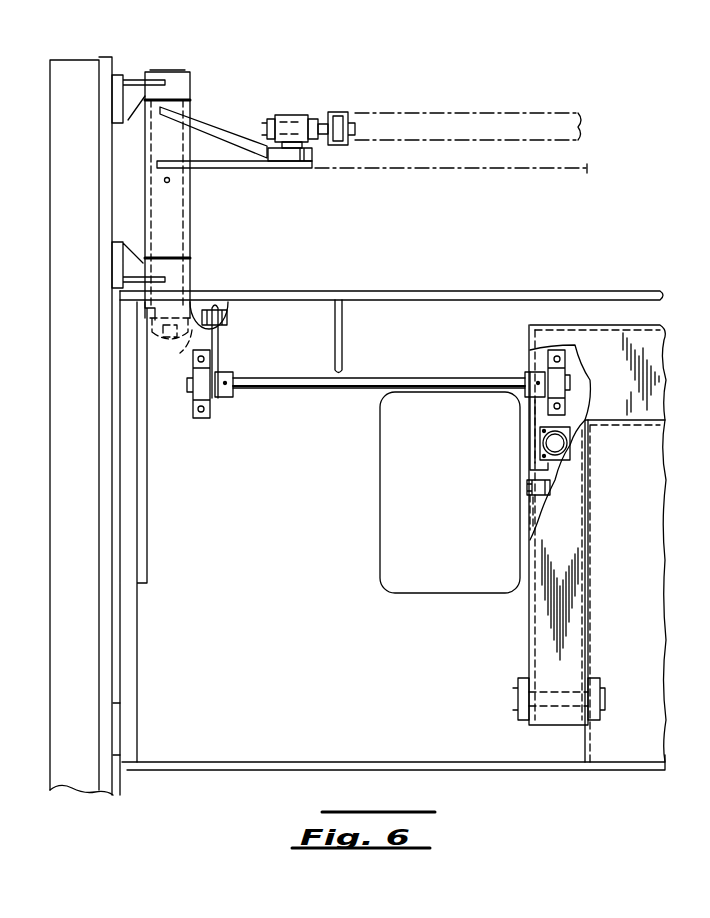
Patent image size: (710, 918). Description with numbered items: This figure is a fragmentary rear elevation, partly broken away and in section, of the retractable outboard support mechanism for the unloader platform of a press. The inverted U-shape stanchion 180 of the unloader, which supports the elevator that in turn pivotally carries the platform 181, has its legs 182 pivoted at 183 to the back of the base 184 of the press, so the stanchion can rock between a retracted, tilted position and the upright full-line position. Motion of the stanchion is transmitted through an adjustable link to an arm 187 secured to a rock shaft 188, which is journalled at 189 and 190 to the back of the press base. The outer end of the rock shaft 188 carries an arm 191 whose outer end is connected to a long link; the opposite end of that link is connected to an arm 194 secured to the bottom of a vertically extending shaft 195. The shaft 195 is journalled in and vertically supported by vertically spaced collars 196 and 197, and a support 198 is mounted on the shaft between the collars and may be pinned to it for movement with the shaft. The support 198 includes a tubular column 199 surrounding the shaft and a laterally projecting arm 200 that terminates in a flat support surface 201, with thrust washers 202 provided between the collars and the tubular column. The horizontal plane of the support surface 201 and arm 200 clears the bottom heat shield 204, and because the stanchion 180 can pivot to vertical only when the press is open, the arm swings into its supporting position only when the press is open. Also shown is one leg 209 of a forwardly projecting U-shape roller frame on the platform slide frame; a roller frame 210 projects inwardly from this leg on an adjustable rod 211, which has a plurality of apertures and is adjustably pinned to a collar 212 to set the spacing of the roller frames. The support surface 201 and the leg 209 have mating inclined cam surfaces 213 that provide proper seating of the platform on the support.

The stanchion 180 is at (632, 421).
The platform 181 is at (446, 114).
The legs 182 is at (580, 565).
The pivot 183 is at (606, 702).
The base 184 is at (500, 740).
The arm 187 is at (530, 416).
The rock shaft 188 is at (418, 379).
The journal 189 is at (207, 399).
The journal 190 is at (553, 372).
The arm 191 is at (218, 351).
The arm 194 is at (171, 349).
The vertically extending shaft 195 is at (184, 229).
The collar 196 is at (190, 83).
The collar 197 is at (191, 275).
The support 198 is at (193, 198).
The tubular column 199 is at (146, 179).
The laterally projecting arm 200 is at (225, 116).
The flat support surface 201 is at (286, 162).
The thrust washers 202 is at (191, 258).
The bottom heat shield 204 is at (550, 168).
The leg 209 is at (291, 115).
The roller frame 210 is at (347, 144).
The adjustable rod 211 is at (321, 118).
The collar 212 is at (314, 146).
The inclined cam surfaces 213 is at (297, 149).